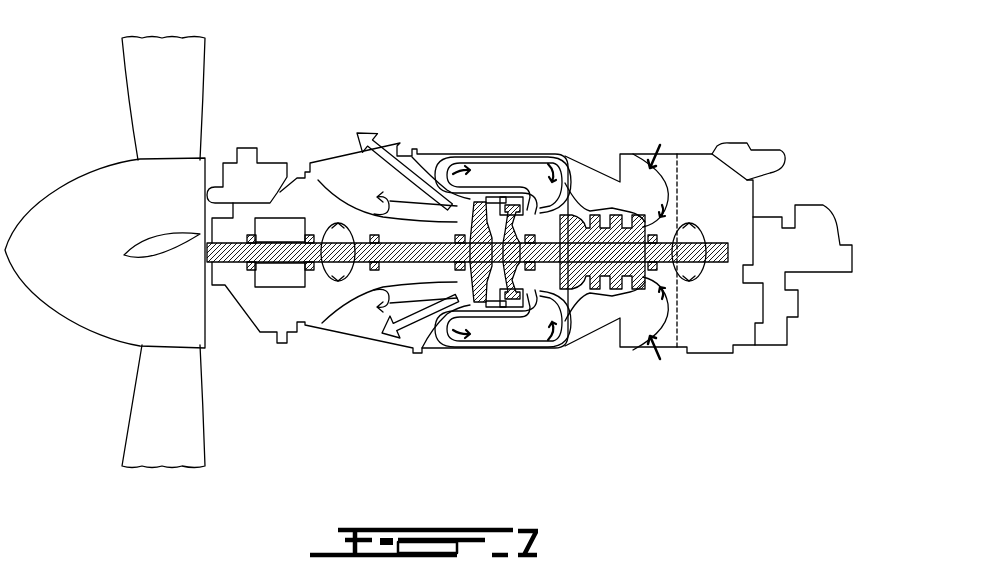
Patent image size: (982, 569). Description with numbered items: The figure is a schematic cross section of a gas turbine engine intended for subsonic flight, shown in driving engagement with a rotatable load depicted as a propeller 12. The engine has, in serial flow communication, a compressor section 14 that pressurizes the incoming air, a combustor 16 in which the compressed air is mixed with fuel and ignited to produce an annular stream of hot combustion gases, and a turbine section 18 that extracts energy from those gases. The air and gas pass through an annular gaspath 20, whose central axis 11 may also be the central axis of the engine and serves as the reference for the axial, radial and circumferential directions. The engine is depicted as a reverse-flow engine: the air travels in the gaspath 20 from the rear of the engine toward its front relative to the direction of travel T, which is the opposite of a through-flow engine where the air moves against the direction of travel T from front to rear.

The central axis 11 is at (922, 252).
The propeller 12 is at (182, 57).
The compressor section 14 is at (603, 203).
The combustor 16 is at (512, 330).
The turbine section 18 is at (456, 279).
The annular gaspath 20 is at (563, 331).
The direction of travel T is at (822, 120).